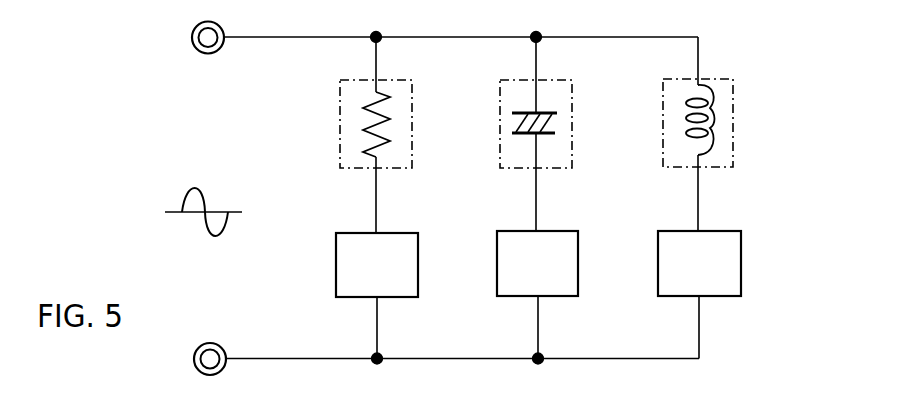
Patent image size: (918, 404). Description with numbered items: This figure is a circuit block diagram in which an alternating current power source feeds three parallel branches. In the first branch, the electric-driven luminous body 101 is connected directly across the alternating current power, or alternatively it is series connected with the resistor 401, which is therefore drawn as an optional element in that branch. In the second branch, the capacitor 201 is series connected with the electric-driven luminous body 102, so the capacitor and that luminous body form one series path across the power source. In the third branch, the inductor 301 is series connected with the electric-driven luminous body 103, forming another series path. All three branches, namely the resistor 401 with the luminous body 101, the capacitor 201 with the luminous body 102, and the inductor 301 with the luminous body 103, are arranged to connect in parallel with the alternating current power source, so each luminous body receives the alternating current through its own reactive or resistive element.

The resistor 401 is at (412, 118).
The capacitor 201 is at (572, 128).
The inductor 301 is at (733, 128).
The electric-driven luminous body 101 is at (377, 265).
The electric-driven luminous body 102 is at (537, 263).
The electric-driven luminous body 103 is at (699, 263).